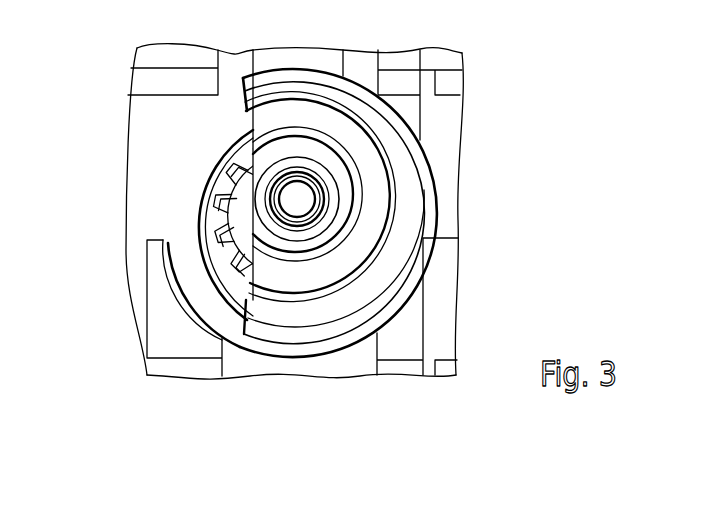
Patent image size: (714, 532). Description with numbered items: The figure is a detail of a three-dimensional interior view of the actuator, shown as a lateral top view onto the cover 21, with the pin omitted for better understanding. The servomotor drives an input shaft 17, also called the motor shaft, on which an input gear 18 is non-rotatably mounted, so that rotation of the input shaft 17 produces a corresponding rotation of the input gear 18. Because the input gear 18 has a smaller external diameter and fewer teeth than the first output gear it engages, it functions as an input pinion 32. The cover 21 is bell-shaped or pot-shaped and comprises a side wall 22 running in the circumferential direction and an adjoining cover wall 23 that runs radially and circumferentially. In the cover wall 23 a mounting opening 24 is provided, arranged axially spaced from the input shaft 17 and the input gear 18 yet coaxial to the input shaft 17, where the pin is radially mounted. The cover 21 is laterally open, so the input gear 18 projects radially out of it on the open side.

The input shaft 17 is at (293, 200).
The input gear 18 is at (159, 225).
The input pinion 32 is at (225, 182).
The cover 21 is at (449, 179).
The side wall 22 is at (413, 293).
The cover wall 23 is at (373, 157).
The mounting opening 24 is at (318, 212).